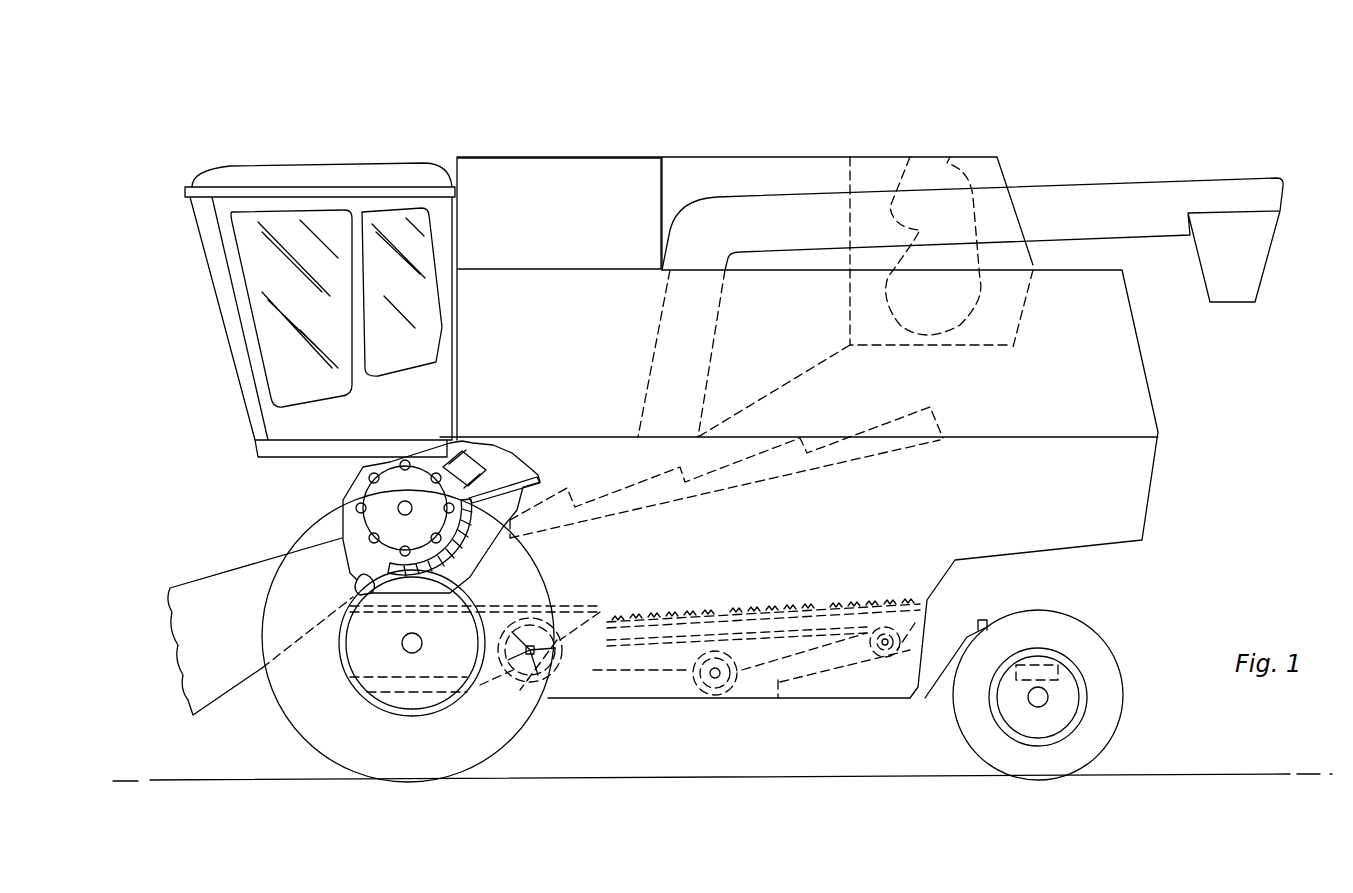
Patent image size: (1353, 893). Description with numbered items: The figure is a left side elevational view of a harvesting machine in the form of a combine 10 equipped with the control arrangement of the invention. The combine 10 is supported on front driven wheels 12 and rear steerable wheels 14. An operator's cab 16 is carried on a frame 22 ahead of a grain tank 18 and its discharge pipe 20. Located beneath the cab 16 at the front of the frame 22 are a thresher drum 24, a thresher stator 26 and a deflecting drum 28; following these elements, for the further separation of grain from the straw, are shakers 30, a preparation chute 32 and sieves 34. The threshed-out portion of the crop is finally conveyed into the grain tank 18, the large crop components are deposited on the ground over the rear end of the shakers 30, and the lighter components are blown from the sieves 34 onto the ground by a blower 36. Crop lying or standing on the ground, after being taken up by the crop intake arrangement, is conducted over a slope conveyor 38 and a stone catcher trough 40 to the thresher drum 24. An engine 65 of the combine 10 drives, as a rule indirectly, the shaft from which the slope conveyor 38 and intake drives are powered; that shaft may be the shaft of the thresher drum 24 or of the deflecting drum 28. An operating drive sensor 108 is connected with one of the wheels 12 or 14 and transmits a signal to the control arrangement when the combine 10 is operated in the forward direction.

The combine 10 is at (703, 135).
The front driven wheels 12 is at (462, 753).
The rear steerable wheels 14 is at (1050, 763).
The operator's cab 16 is at (272, 170).
The grain tank 18 is at (580, 156).
The discharge pipe 20 is at (1090, 184).
The frame 22 is at (907, 526).
The thresher drum 24 is at (377, 502).
The thresher stator 26 is at (487, 527).
The deflecting drum 28 is at (475, 452).
The shakers 30 is at (937, 422).
The grain pan 32 is at (567, 605).
The sieves 34 is at (758, 603).
The blower 36 is at (523, 698).
The slope conveyor 38 is at (213, 582).
The stone catcher trough 40 is at (348, 574).
The engine 65 is at (925, 156).
The operating drive sensor 108 is at (1058, 672).